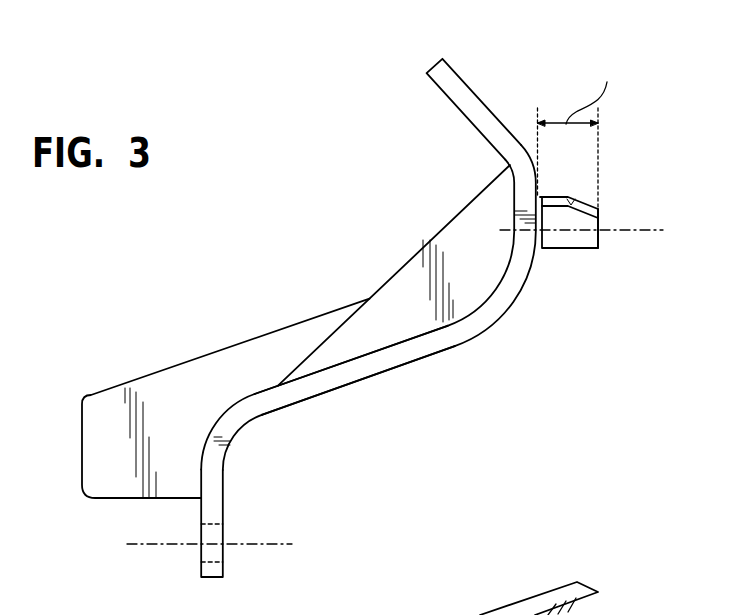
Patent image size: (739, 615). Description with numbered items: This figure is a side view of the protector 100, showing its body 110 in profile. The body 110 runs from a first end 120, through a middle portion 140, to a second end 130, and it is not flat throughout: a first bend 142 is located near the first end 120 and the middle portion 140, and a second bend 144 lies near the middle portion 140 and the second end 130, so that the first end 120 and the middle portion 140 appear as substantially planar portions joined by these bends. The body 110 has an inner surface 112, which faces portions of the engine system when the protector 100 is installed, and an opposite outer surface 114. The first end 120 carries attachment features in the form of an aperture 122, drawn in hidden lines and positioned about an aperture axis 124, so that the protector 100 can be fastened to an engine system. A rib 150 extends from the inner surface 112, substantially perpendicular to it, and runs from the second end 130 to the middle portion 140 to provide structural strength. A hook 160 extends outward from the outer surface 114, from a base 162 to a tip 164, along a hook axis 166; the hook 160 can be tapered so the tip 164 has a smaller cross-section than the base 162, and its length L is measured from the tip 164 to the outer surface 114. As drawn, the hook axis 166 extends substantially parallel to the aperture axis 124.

The protector 100 is at (539, 94).
The body 110 is at (420, 346).
The inner surface 112 is at (384, 351).
The outer surface 114 is at (347, 388).
The first end 120 is at (217, 508).
The aperture 122 is at (207, 536).
The aperture axis 124 is at (263, 546).
The second end 130 is at (524, 168).
The middle portion 140 is at (387, 358).
The first bend 142 is at (235, 427).
The second bend 144 is at (521, 242).
The rib 150 is at (413, 273).
The hook 160 is at (569, 238).
The base 162 is at (541, 197).
The tip 164 is at (598, 225).
The hook axis 166 is at (635, 231).